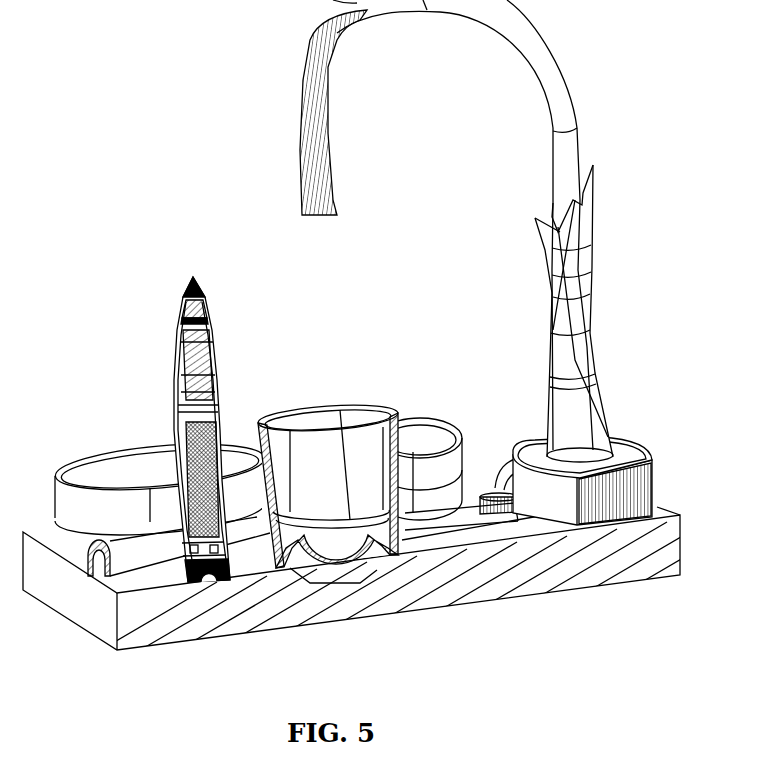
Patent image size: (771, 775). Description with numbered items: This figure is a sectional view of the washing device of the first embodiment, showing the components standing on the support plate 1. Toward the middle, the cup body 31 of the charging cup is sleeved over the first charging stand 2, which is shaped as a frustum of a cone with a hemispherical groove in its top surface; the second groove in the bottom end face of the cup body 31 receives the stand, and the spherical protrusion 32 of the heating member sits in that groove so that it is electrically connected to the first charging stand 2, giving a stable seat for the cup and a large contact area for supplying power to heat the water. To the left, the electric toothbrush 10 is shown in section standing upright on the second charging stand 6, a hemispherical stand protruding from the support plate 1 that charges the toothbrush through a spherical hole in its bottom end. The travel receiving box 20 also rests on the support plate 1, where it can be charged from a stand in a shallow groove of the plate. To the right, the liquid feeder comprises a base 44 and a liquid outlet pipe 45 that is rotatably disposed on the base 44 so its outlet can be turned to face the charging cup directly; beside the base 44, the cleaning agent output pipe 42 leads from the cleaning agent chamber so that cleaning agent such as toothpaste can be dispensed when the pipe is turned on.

The support plate 1 is at (547, 577).
The first charging stand 2 is at (385, 540).
The second charging stand 6 is at (210, 572).
The electric toothbrush 10 is at (172, 479).
The travel receiving box 20 is at (80, 472).
The cup body 31 is at (330, 517).
The spherical protrusion 32 is at (343, 565).
The cleaning agent output pipe 42 is at (497, 463).
The base 44 is at (630, 487).
The liquid outlet pipe 45 is at (317, 113).